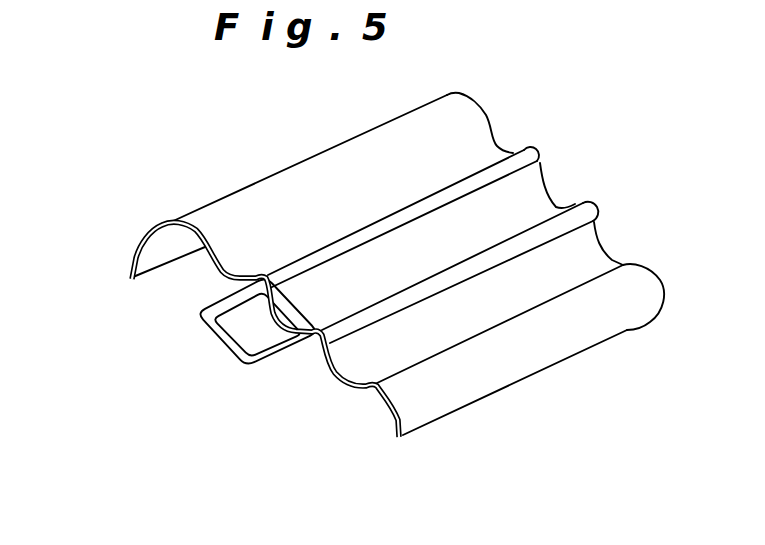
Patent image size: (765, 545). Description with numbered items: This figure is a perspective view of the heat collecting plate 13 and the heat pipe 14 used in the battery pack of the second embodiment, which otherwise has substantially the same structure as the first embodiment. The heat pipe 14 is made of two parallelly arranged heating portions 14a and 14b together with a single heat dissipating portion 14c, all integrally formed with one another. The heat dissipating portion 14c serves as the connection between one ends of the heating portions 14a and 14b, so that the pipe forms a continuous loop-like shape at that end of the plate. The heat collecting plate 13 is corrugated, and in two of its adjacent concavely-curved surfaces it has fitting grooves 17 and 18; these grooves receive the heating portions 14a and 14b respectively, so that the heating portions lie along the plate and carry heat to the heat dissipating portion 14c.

The heat collecting plate 13 is at (333, 143).
The heat pipe 14 is at (227, 427).
The heating portion 14a is at (432, 201).
The heating portion 14b is at (498, 357).
The heat dissipating portion 14c is at (210, 333).
The fitting groove 17 is at (363, 277).
The fitting groove 18 is at (418, 330).